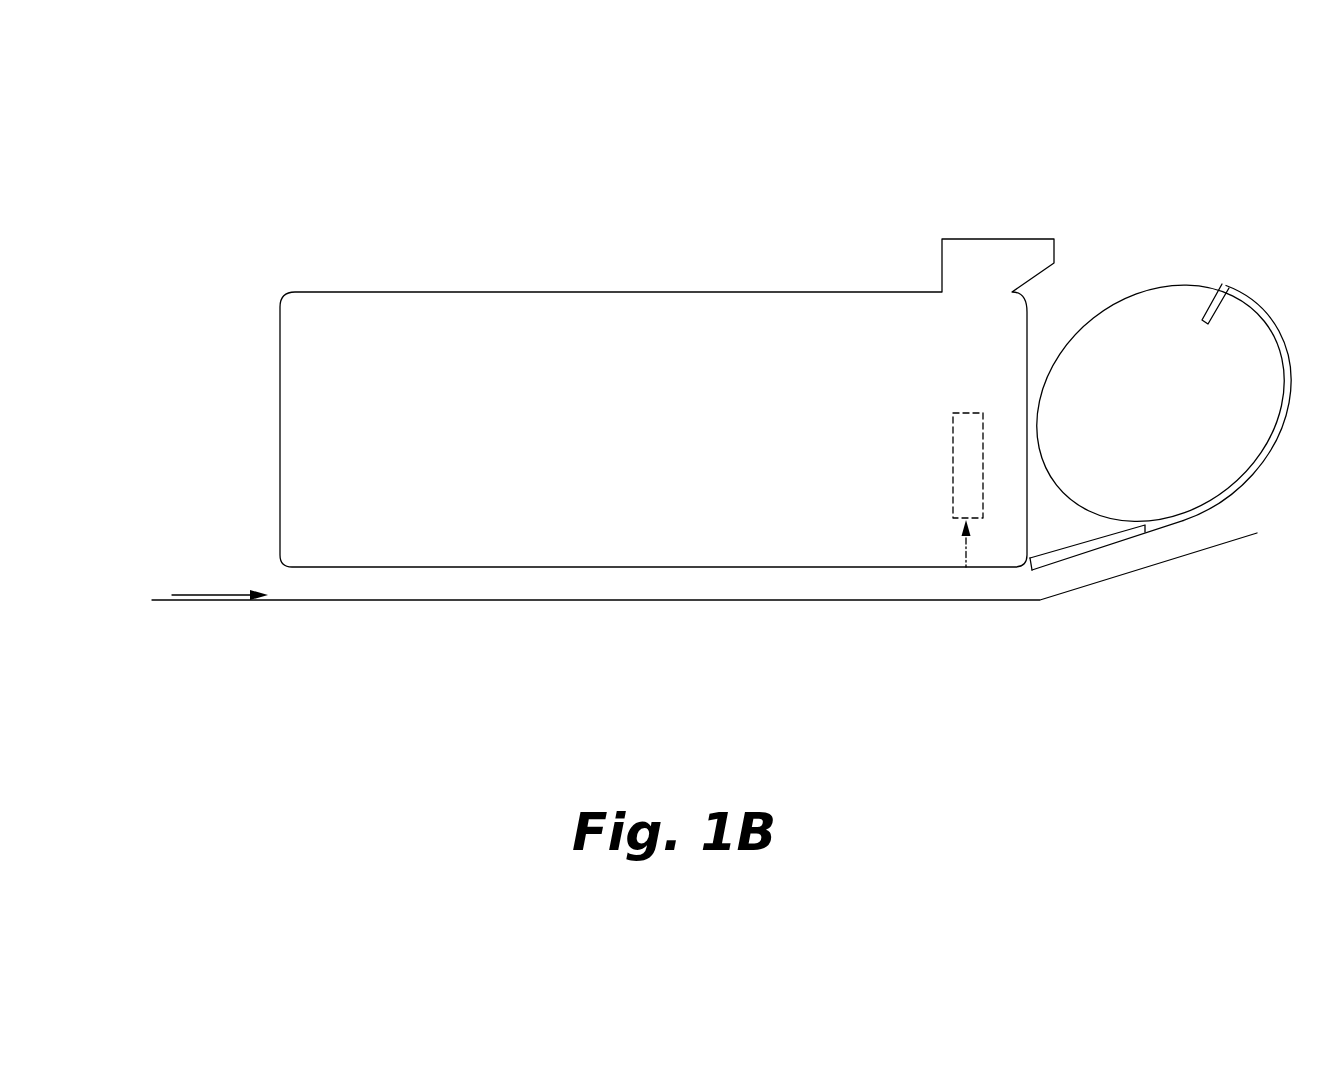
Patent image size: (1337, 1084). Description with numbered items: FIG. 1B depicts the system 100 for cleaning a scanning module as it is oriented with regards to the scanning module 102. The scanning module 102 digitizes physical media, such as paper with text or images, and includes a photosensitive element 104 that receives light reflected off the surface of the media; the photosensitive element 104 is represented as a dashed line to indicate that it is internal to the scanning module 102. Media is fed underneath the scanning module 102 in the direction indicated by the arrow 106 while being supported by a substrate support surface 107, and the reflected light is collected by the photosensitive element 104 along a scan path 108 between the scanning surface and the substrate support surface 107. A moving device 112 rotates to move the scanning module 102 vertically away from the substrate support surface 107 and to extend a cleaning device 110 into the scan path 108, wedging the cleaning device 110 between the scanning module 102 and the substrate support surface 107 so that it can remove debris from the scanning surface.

The system 100 is at (480, 116).
The scanning module 102 is at (784, 291).
The photosensitive element 104 is at (952, 498).
The arrow 106 is at (227, 597).
The substrate support surface 107 is at (593, 602).
The scan path 108 is at (966, 536).
The cleaning device 110 is at (1090, 552).
The moving device 112 is at (1092, 318).